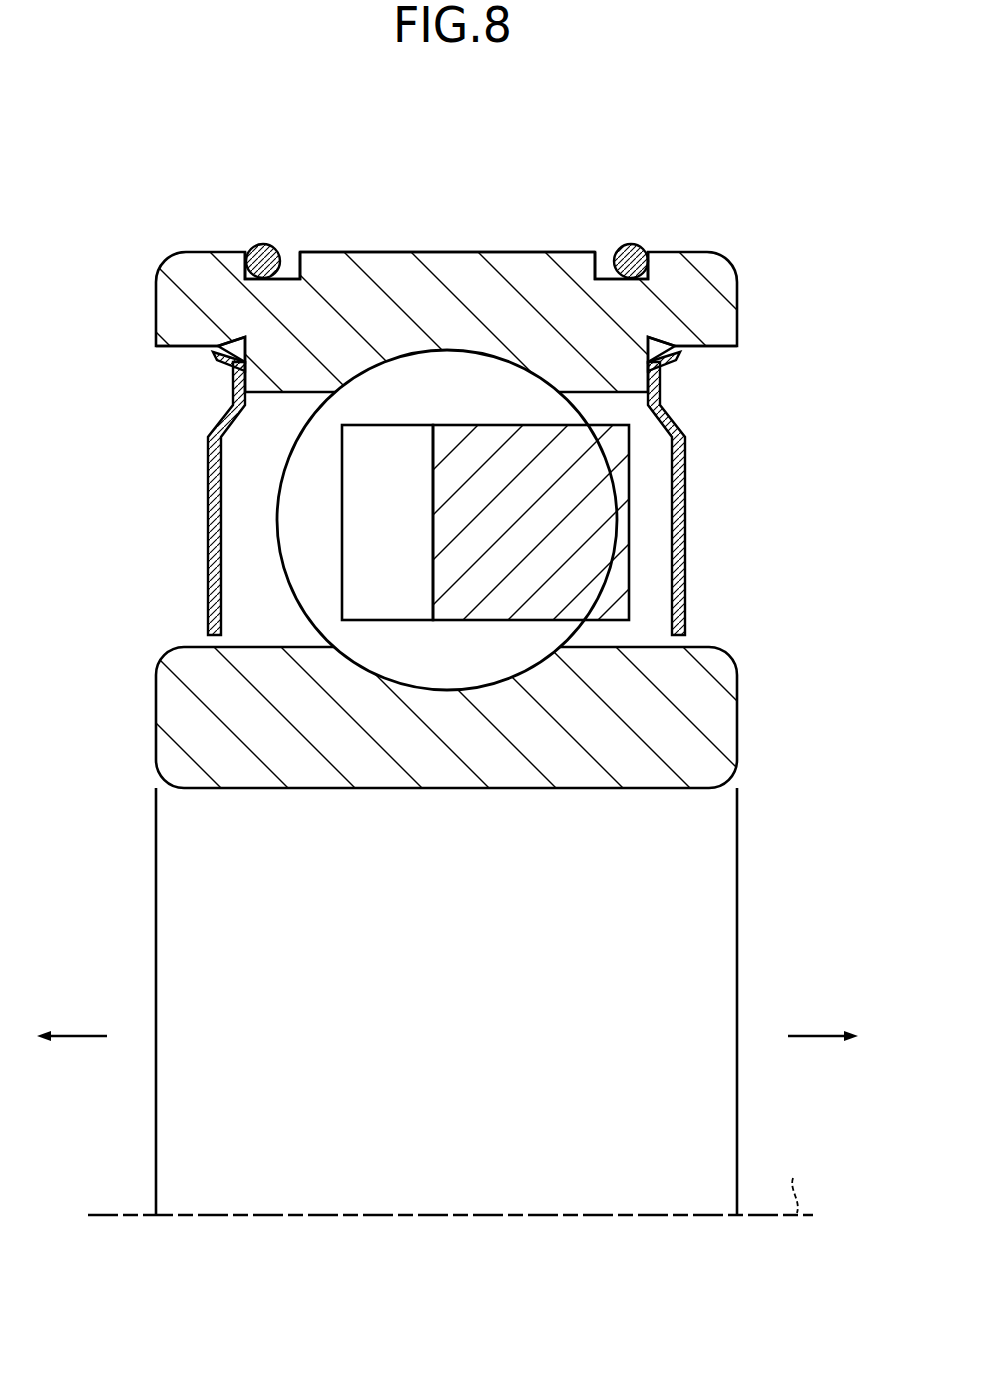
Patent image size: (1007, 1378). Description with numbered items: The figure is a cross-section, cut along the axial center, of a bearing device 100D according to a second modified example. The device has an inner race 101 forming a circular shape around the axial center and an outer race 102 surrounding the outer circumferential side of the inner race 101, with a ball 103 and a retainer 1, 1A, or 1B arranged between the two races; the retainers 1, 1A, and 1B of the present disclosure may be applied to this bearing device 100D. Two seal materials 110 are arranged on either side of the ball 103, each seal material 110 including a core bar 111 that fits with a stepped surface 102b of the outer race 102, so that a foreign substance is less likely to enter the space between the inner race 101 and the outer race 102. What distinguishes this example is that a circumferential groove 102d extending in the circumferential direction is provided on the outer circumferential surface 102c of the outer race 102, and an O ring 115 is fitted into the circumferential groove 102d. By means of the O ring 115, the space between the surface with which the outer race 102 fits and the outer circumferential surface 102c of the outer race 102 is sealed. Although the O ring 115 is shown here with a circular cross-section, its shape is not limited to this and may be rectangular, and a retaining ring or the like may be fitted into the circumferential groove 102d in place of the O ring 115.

The bearing device 100D is at (738, 172).
The retainer 1 is at (484, 418).
The retainer 1A is at (387, 522).
The retainer 1B is at (515, 522).
The inner race 101 is at (145, 735).
The outer race 102 is at (145, 314).
The stepped surface 102b is at (203, 346).
The outer circumferential surface 102c is at (435, 250).
The circumferential groove 102d is at (290, 258).
The ball 103 is at (292, 466).
The seal material 110 is at (188, 508).
The core bar 111 is at (208, 571).
The O ring 115 is at (256, 229).